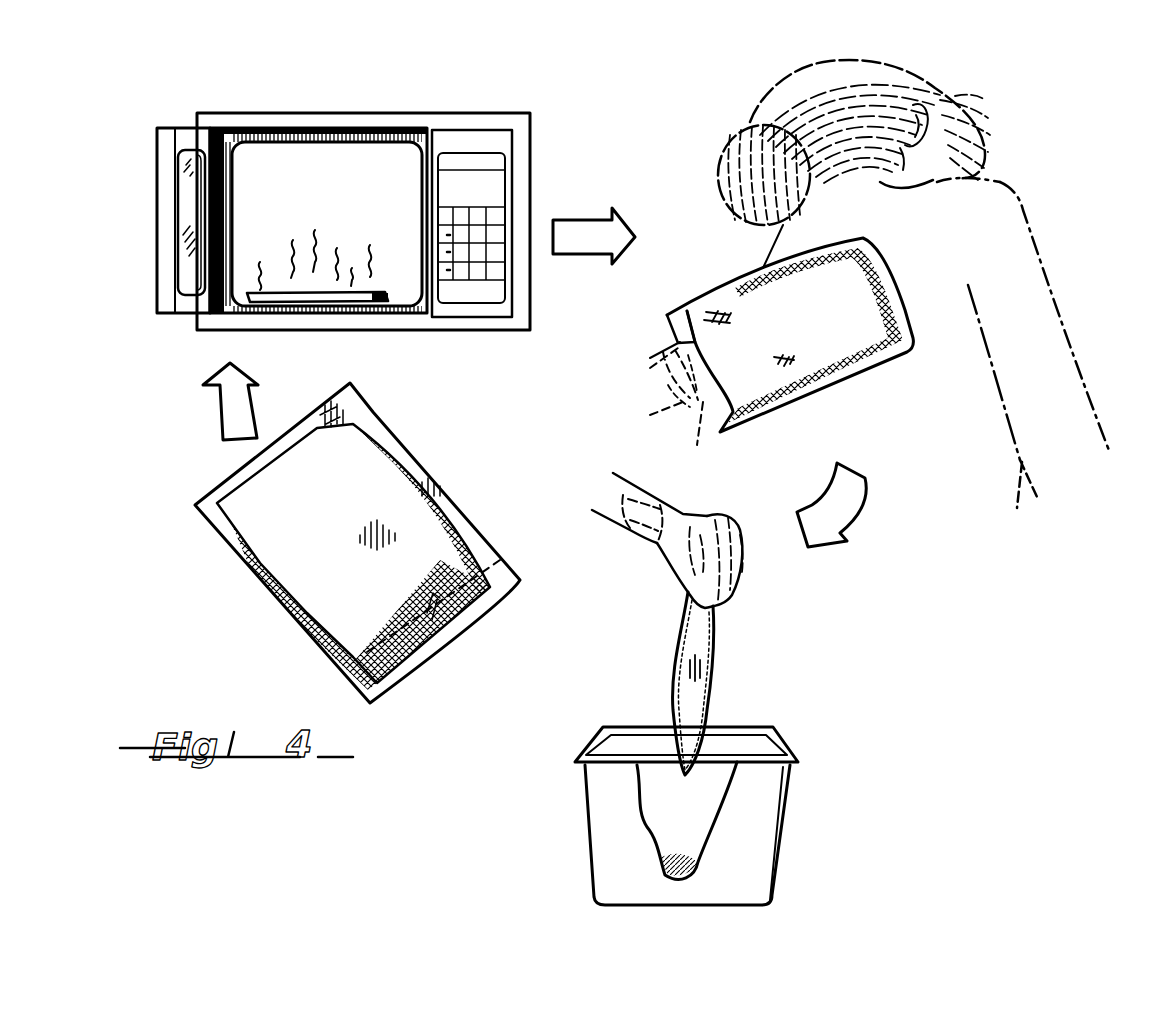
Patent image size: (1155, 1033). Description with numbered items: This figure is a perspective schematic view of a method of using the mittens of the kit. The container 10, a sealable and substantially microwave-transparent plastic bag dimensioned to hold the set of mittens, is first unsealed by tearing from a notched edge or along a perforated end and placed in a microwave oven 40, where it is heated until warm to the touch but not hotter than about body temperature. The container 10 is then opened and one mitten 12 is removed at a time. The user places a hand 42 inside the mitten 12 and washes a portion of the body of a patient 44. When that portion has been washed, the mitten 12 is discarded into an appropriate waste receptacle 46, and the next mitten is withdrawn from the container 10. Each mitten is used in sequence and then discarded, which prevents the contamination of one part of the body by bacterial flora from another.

The container 10 is at (205, 523).
The mitten 12 is at (743, 290).
The microwave oven 40 is at (230, 112).
The hand 42 is at (655, 370).
The patient 44 is at (1025, 207).
The waste receptacle 46 is at (585, 797).